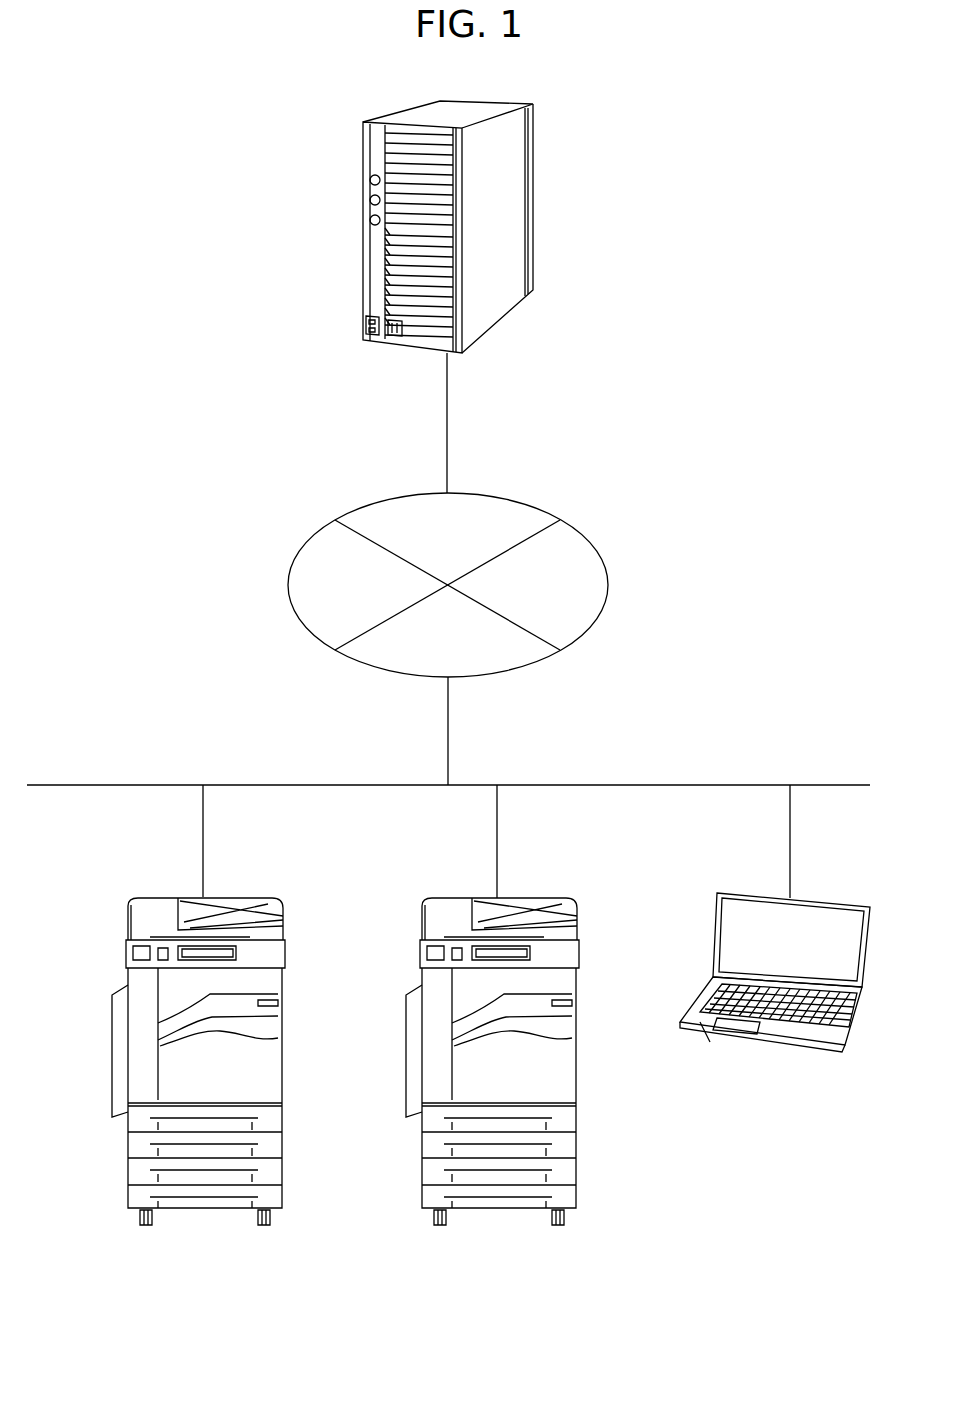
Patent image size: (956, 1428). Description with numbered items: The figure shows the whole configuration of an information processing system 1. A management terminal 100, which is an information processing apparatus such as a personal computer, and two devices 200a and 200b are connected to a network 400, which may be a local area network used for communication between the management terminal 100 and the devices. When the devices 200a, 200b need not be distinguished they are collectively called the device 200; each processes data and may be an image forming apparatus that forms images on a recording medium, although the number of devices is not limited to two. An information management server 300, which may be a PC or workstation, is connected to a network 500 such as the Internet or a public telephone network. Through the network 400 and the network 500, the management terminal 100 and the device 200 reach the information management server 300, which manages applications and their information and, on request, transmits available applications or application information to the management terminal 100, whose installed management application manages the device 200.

The information processing system 1 is at (702, 81).
The management terminal 100 is at (770, 1048).
The device 200 is at (520, 1288).
The device 200a is at (200, 1210).
The device 200b is at (494, 1210).
The information management server 300 is at (533, 205).
The network 400 is at (685, 785).
The network 500 is at (608, 585).